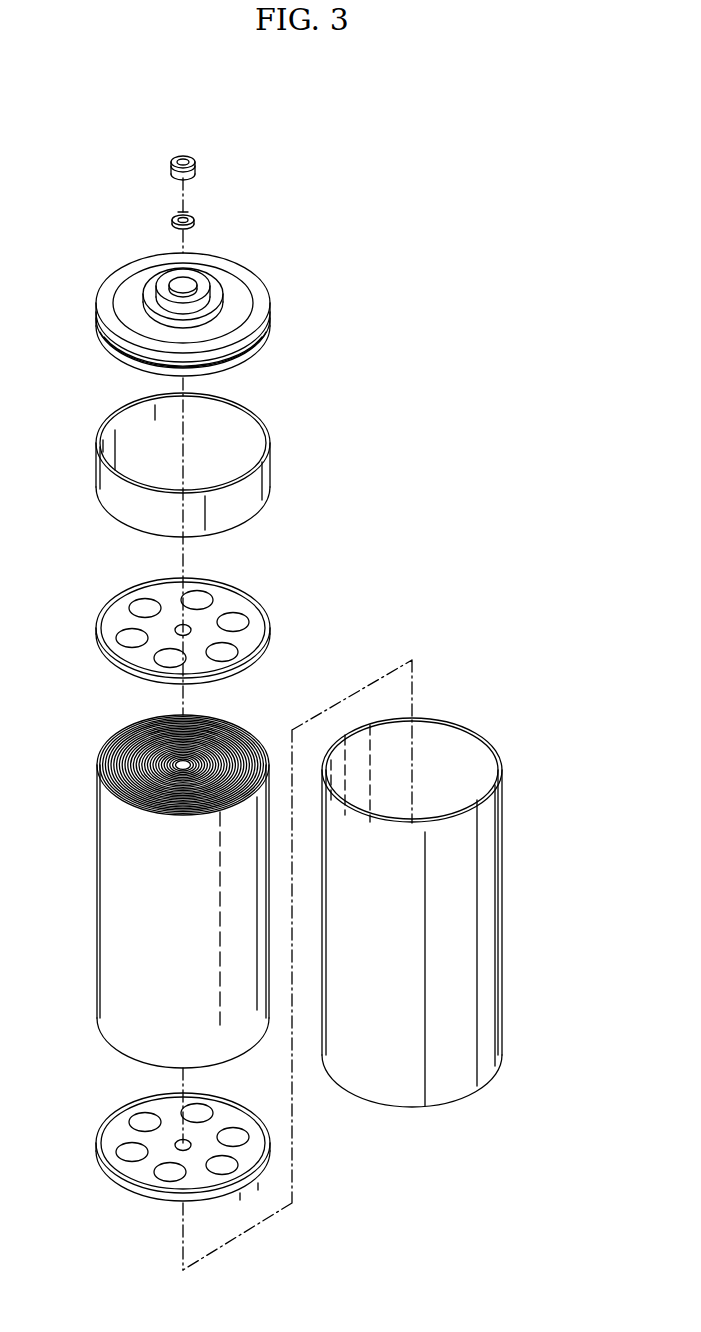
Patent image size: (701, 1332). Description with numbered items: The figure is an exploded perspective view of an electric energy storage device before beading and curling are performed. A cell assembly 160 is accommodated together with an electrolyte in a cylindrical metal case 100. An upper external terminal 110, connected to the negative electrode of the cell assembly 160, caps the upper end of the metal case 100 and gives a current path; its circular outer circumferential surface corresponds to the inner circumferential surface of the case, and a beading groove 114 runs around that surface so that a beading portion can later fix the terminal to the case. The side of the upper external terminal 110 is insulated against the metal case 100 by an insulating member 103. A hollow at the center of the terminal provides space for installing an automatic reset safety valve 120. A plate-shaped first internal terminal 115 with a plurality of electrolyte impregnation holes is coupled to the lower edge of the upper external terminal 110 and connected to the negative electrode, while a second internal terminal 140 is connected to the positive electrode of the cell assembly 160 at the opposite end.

The cylindrical metal case 100 is at (502, 889).
The insulating member 103 is at (98, 480).
The upper external terminal 110 is at (263, 272).
The beading groove 114 is at (250, 356).
The first internal terminal 115 is at (98, 640).
The automatic reset safety valve 120 is at (203, 157).
The second internal terminal 140 is at (98, 1163).
The cell assembly 160 is at (84, 789).